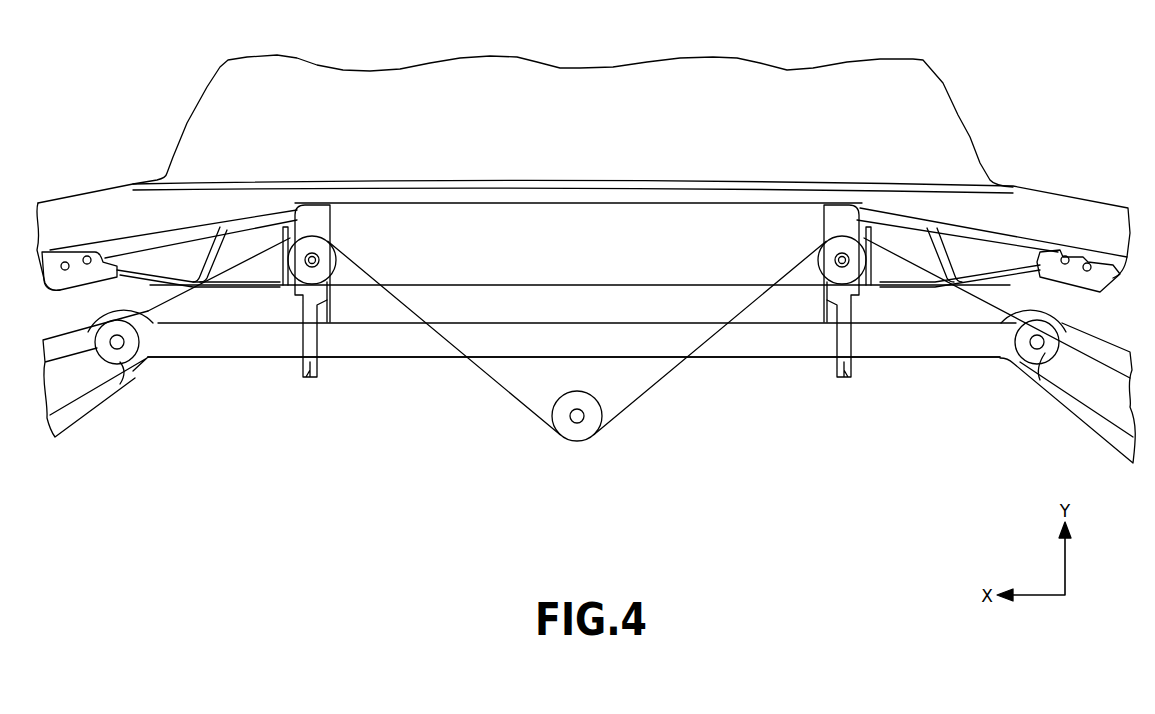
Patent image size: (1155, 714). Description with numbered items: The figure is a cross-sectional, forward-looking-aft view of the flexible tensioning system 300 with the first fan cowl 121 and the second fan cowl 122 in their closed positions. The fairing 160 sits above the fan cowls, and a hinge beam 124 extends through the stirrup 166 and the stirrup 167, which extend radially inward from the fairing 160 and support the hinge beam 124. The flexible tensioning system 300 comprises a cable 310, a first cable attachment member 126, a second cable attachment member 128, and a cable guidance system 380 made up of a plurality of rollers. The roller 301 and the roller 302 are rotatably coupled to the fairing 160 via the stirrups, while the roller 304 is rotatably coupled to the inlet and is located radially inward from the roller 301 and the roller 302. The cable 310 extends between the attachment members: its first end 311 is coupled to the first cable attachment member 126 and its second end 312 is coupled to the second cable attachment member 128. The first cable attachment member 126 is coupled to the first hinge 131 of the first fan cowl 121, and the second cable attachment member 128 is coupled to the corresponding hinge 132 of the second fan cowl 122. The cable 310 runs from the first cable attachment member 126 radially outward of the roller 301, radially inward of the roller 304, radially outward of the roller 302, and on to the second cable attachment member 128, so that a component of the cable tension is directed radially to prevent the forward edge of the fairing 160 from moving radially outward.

The fairing 160 is at (600, 103).
The roller 301 is at (332, 245).
The roller 302 is at (822, 245).
The roller 304 is at (578, 431).
The cable 310 is at (404, 294).
The first end 311 is at (102, 337).
The second end 312 is at (1068, 336).
The first fan cowl 121 is at (68, 415).
The second fan cowl 122 is at (1112, 438).
The hinge beam 124 is at (444, 360).
The first cable attachment member 126 is at (120, 362).
The second cable attachment member 128 is at (1043, 352).
The first hinge 131 is at (150, 370).
The second guide track 132 is at (1024, 385).
The stirrup 166 is at (312, 370).
The stirrup 167 is at (846, 370).
The flexible tensioning system 300 is at (736, 432).
The cable guidance system 380 is at (508, 435).